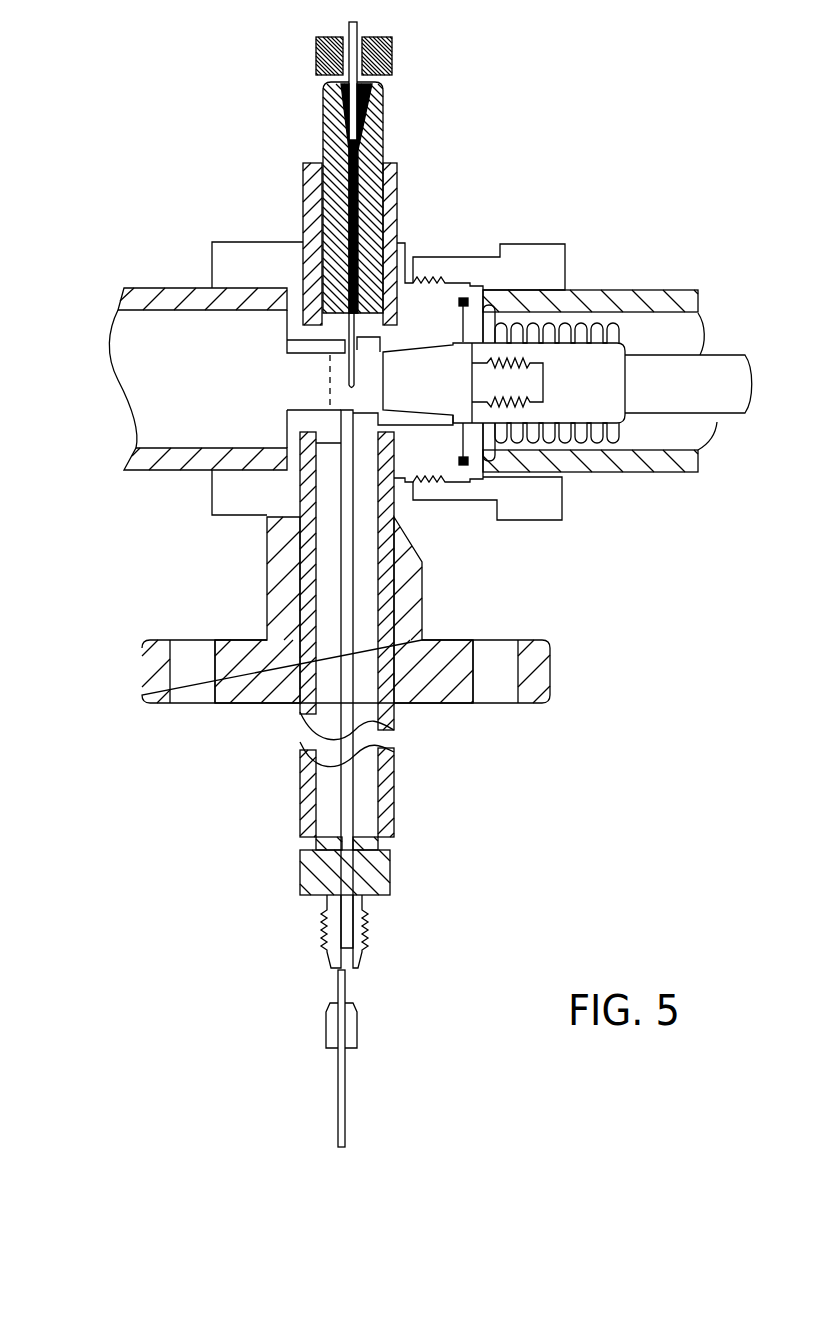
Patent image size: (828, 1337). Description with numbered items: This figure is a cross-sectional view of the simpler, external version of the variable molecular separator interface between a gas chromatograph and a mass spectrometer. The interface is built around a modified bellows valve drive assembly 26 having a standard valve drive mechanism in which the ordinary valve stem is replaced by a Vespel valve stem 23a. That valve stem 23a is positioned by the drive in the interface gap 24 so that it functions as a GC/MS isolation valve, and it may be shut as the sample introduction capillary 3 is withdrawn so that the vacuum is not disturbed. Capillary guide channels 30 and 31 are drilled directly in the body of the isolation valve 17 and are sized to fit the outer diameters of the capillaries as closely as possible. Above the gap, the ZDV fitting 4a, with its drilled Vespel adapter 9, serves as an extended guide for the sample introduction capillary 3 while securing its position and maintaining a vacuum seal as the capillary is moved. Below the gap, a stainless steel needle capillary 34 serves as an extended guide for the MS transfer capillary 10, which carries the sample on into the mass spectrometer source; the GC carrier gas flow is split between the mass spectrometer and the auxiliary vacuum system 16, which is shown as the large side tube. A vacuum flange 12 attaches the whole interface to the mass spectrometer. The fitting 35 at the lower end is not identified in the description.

The ZDV fitting 4a is at (377, 96).
The Vespel adapter 9 is at (365, 143).
The sample introduction capillary 3 is at (357, 200).
The capillary guide channel 30 is at (345, 340).
The interface gap 24 is at (342, 397).
The auxiliary vacuum system 16 is at (160, 370).
The isolation valve 17 is at (413, 318).
The valve stem 23a is at (430, 367).
The bellows valve drive assembly 26 is at (633, 290).
The capillary guide channel 31 is at (355, 440).
The stainless steel needle capillary 34 is at (395, 555).
The vacuum flange 12 is at (550, 648).
The end plug 35 is at (380, 895).
The MS transfer capillary 10 is at (340, 1120).